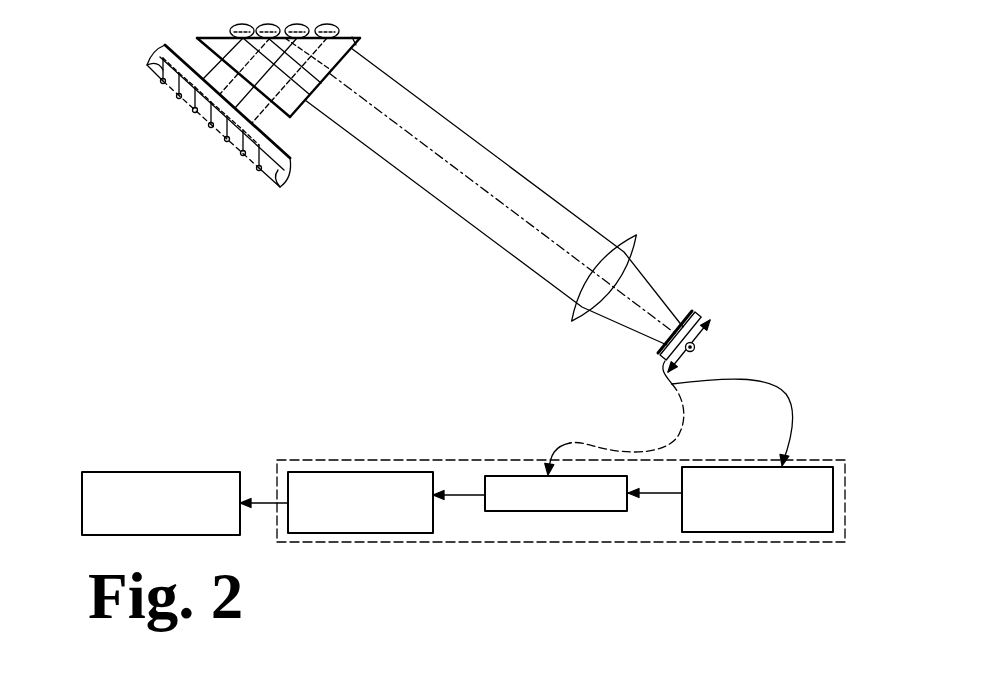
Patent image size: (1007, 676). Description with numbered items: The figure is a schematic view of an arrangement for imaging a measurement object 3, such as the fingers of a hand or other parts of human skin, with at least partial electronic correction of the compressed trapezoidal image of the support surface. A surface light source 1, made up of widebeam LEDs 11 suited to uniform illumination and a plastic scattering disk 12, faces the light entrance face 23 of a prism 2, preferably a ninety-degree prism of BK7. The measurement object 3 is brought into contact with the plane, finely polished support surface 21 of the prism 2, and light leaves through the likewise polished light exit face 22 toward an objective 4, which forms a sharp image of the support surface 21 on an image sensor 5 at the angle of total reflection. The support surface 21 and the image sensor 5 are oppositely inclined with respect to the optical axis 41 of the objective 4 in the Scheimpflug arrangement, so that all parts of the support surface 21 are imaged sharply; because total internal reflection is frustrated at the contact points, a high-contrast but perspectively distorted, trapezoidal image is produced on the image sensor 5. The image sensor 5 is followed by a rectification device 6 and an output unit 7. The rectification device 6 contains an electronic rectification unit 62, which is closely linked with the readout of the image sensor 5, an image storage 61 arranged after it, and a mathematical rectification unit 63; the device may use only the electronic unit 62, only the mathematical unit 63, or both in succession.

The light source 1 is at (148, 68).
The widebeam LEDs 11 is at (227, 139).
The scattering disk 12 is at (252, 138).
The prism 2 is at (384, 148).
The support surface 21 is at (328, 50).
The light exit face 22 is at (307, 105).
The light entrance face 23 is at (283, 115).
The measurement object 3 is at (231, 31).
The objective 4 is at (645, 262).
The optical axis 41 is at (522, 213).
The image sensor 5 is at (703, 314).
The rectification device 6 is at (529, 435).
The image storage 61 is at (533, 488).
The electronic rectification unit 62 is at (803, 488).
The mathematical rectification unit 63 is at (402, 488).
The output unit 7 is at (187, 488).